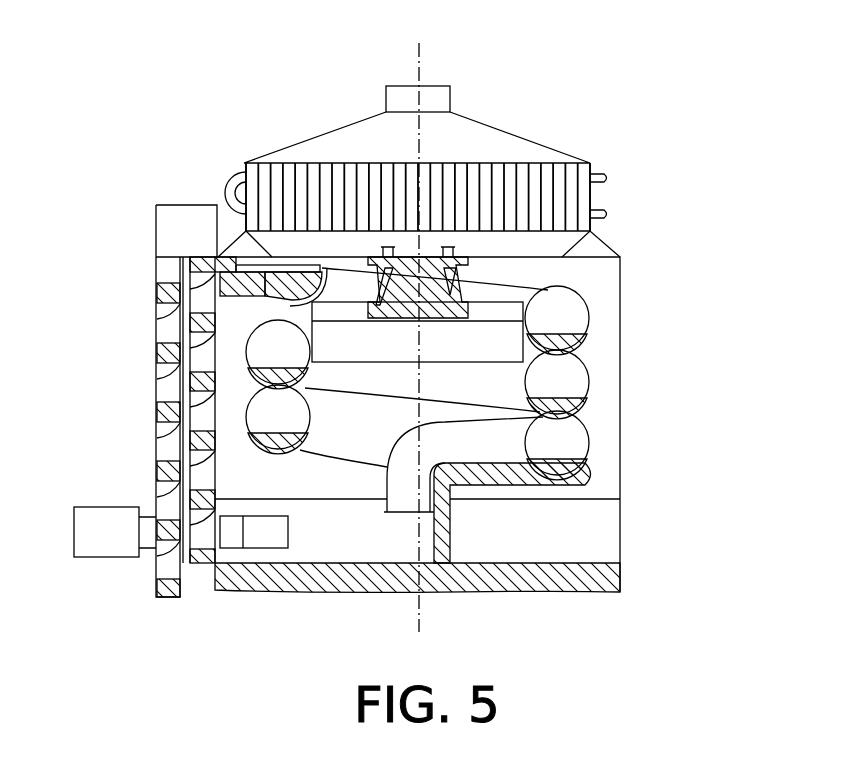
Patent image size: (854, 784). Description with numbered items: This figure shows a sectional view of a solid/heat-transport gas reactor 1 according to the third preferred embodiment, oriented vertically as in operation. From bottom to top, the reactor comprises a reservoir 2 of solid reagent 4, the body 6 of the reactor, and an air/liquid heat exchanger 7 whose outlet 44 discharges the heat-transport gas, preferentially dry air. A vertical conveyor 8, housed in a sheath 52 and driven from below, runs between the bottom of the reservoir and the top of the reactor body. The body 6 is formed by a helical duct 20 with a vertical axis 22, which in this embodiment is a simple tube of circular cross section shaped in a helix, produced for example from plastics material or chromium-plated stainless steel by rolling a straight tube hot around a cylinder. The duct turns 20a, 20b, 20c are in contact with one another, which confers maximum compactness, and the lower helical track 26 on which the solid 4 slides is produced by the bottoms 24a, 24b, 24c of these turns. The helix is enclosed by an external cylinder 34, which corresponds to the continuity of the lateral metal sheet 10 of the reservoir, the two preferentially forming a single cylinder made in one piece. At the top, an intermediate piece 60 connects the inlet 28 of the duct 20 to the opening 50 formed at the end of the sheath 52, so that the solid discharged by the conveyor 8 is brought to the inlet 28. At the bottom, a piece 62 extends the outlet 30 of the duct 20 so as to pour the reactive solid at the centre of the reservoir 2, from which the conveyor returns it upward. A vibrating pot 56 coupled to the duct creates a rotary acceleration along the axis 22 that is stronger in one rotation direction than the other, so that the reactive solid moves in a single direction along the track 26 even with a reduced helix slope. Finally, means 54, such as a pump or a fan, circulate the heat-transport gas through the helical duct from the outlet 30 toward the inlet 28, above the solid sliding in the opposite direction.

The reactor 1 is at (289, 97).
The reservoir 2 is at (472, 598).
The solid reagent 4 is at (158, 296).
The body of the reactor 6 is at (638, 344).
The air/liquid heat exchanger 7 is at (548, 146).
The vertical conveyor 8 is at (153, 454).
The lateral metal sheet 10 is at (620, 588).
The helical duct 20 is at (592, 282).
The duct turn 20a is at (578, 312).
The duct turn 20b is at (578, 378).
The duct turn 20c is at (576, 440).
The vertical axis 22 is at (419, 50).
The bottom of the turn 24a is at (565, 338).
The bottom of the turn 24b is at (565, 404).
The bottom of the turn 24c is at (572, 465).
The helical bottom track 26 is at (542, 338).
The inlet 28 is at (288, 282).
The outlet 30 is at (477, 455).
The external cylinder 34 is at (620, 545).
The outlet for heat-transport gas 44 is at (436, 86).
The opening 50 is at (215, 255).
The sheath 52 is at (156, 400).
The means for circulating a heat-transport gas 54 is at (86, 507).
The vibrating pot 56 is at (412, 258).
The intermediate piece 60 is at (248, 268).
The piece extending the outlet 62 is at (400, 513).